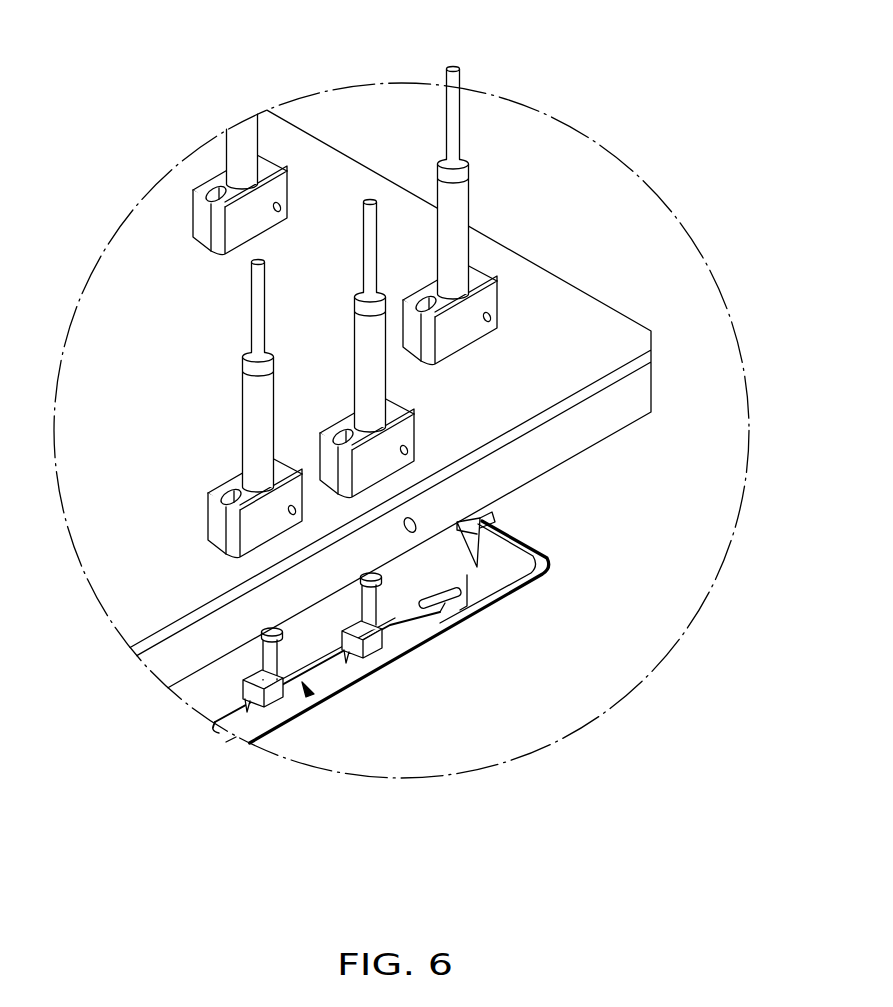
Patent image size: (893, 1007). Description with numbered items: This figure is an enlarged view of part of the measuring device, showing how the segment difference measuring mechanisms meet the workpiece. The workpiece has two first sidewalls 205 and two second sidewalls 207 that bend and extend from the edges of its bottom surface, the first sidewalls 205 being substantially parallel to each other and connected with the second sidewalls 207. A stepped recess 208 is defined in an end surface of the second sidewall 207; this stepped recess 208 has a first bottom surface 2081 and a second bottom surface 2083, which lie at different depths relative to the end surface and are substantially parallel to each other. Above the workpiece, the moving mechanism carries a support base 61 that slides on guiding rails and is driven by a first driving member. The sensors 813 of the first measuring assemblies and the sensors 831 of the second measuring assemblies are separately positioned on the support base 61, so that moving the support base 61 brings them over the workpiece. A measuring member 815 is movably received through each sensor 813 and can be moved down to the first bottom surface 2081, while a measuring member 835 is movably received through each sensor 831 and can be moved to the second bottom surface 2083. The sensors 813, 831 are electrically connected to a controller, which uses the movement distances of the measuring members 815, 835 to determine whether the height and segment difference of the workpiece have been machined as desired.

The support base 61 is at (162, 268).
The sensor 813 is at (370, 374).
The sensor 831 is at (250, 428).
The measuring member 835 is at (243, 692).
The second sidewall 207 is at (443, 630).
The stepped recess 208 is at (325, 674).
The first bottom surface 2081 is at (348, 665).
The second bottom surface 2083 is at (240, 715).
The measuring member 815 is at (373, 657).
The first sidewall 205 is at (483, 525).